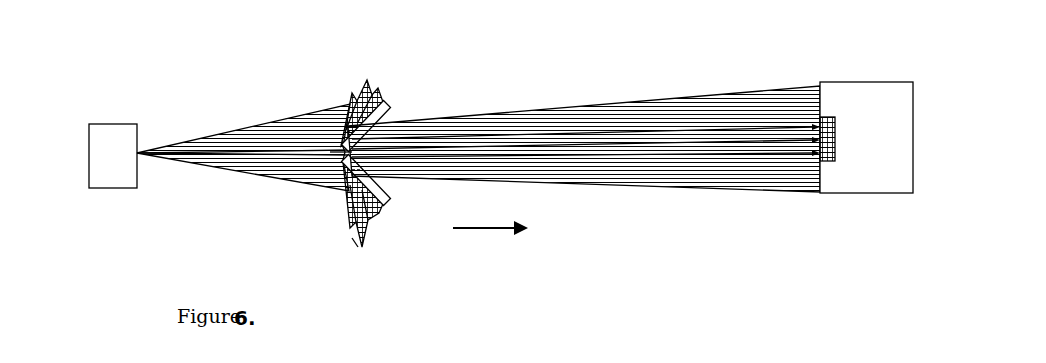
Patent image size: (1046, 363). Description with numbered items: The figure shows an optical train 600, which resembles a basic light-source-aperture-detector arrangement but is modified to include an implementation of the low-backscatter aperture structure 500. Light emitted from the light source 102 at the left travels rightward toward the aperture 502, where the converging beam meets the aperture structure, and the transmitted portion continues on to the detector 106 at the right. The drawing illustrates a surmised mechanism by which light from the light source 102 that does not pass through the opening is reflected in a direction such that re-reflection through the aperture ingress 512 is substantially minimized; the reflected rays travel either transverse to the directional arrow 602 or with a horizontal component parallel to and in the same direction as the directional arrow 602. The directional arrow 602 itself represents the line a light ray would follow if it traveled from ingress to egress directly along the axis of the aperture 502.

The light source 102 is at (91, 188).
The detector 106 is at (883, 77).
The low-backscatter aperture structure 500 is at (429, 86).
The aperture 502 is at (326, 160).
The aperture ingress 512 is at (344, 142).
The optical train 600 is at (652, 247).
The directional arrow 602 is at (488, 232).